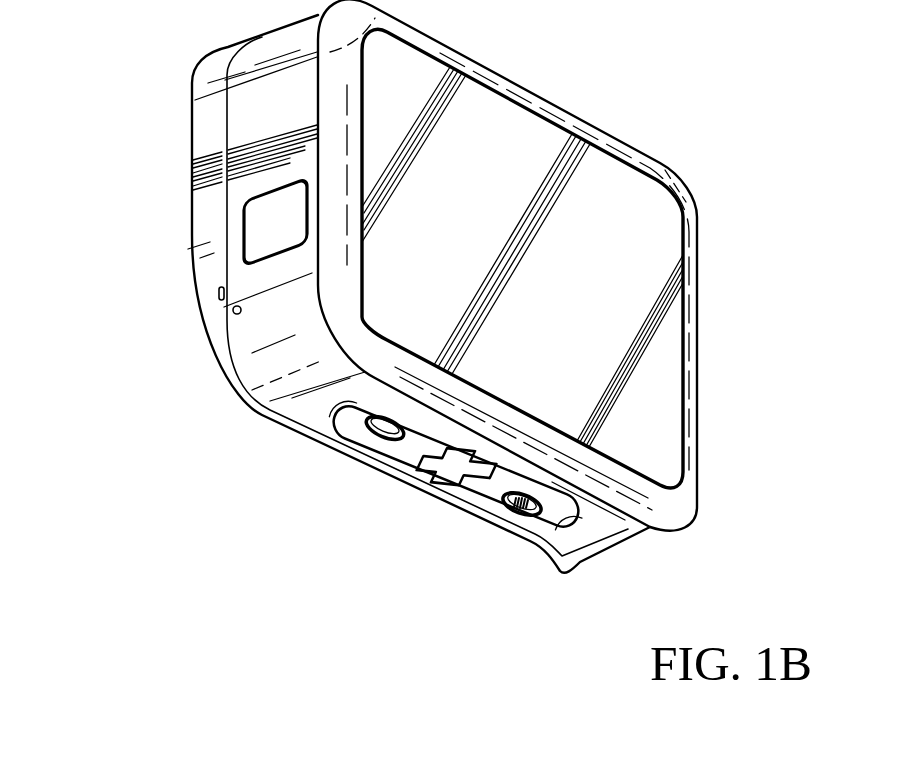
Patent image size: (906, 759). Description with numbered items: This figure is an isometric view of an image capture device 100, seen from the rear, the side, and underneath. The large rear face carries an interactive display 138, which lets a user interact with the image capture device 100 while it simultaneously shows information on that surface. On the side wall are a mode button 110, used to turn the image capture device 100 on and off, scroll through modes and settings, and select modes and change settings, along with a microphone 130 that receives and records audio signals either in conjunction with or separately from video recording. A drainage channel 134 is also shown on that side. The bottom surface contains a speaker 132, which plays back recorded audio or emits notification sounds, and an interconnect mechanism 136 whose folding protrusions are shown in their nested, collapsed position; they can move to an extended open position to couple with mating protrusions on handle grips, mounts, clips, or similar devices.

The image capture device 100 is at (686, 80).
The mode button 110 is at (243, 233).
The microphone 130 is at (233, 311).
The speaker 132 is at (521, 511).
The drainage channel 134 is at (212, 294).
The interconnect mechanism 136 is at (387, 449).
The interactive display 138 is at (658, 380).